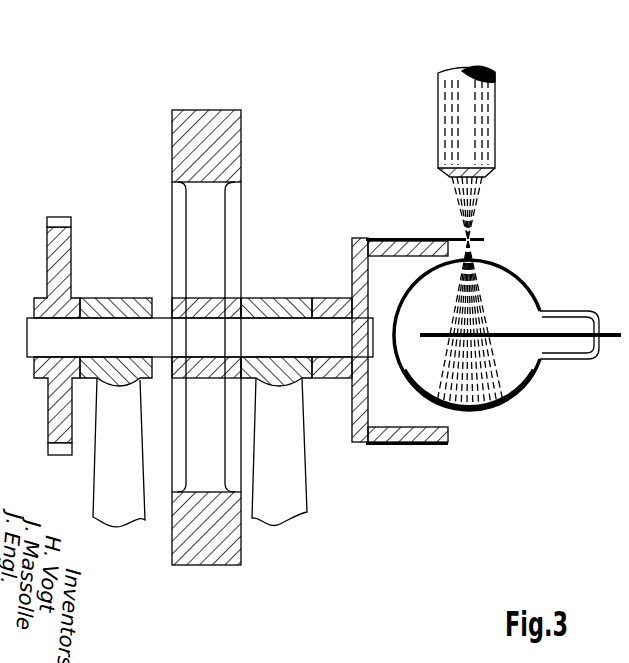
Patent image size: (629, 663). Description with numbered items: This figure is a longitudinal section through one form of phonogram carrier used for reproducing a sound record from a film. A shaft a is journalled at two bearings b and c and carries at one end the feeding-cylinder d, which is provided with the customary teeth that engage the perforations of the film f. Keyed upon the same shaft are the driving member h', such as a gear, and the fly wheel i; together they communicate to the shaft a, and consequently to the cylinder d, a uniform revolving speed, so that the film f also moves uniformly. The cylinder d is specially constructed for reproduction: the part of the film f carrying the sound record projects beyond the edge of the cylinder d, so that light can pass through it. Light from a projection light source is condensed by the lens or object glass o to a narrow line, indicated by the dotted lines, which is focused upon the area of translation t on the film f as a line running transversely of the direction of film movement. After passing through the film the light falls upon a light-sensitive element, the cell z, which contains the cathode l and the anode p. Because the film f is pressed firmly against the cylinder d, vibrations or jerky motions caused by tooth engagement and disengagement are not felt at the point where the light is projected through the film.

The shaft a is at (44, 348).
The driving member h' is at (81, 319).
The bearing b is at (118, 297).
The fly wheel i is at (241, 124).
The bearing c is at (283, 297).
The feeding-cylinder d is at (389, 436).
The film f is at (421, 238).
The area of translation t is at (470, 239).
The lens o is at (478, 118).
The cell z is at (503, 293).
The cathode l is at (488, 412).
The anode p is at (548, 337).